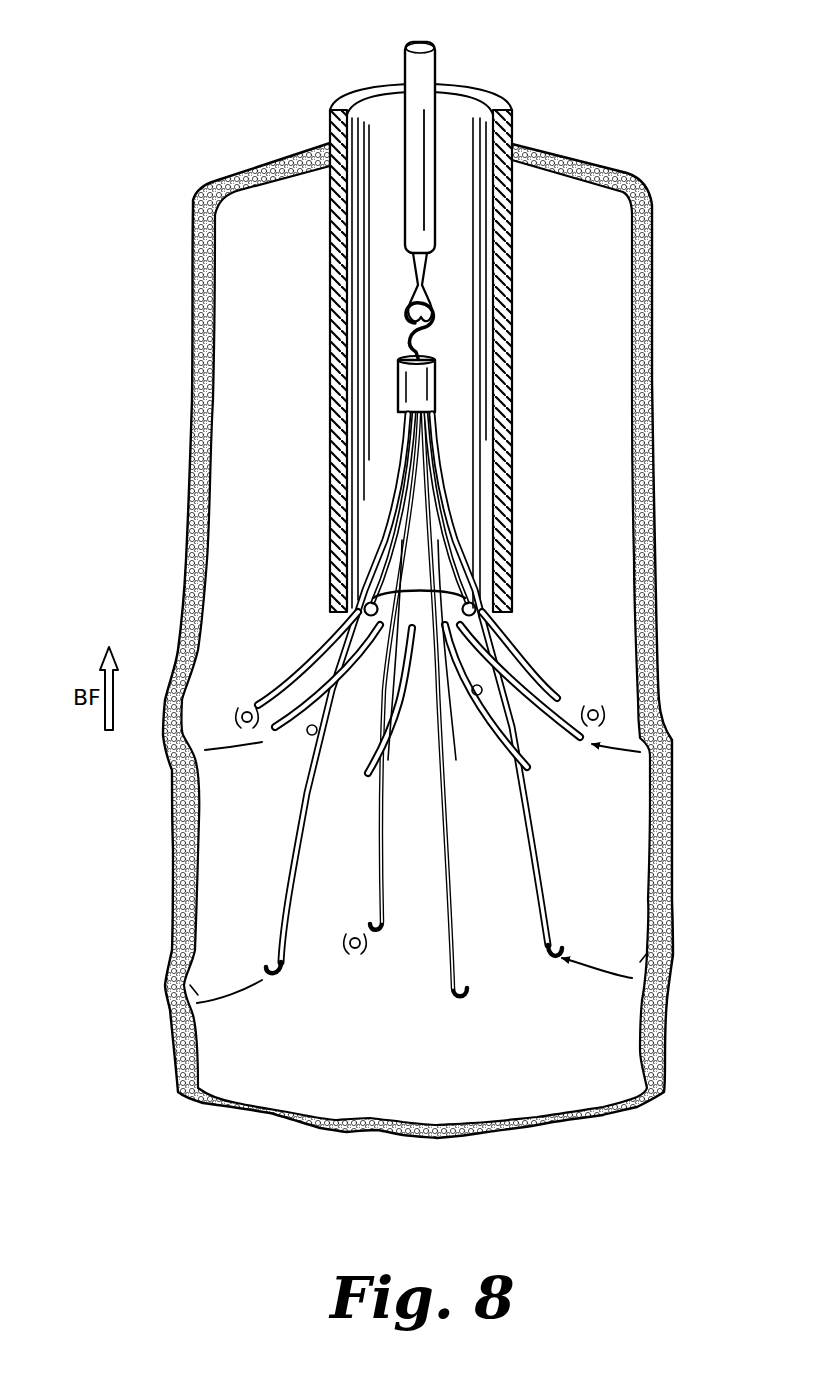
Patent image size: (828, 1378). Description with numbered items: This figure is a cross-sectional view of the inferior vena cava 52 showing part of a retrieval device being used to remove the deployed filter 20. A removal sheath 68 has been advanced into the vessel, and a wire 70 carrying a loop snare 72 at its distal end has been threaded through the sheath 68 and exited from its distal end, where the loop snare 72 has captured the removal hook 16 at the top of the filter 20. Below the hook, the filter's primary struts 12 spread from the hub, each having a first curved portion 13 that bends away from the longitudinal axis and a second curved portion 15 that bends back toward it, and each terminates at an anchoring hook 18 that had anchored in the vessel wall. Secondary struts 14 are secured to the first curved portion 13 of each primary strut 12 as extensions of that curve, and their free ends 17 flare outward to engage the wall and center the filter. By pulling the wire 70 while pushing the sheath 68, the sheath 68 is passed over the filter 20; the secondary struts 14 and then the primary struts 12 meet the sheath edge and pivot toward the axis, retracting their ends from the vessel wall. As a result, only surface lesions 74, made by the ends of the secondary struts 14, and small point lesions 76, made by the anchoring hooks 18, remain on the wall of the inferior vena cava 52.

The primary struts 12 is at (382, 537).
The first curved portion 13 is at (366, 597).
The secondary struts 14 is at (312, 658).
The second curved portion 15 is at (296, 835).
The removal hook 16 is at (403, 322).
The free ends 17 is at (367, 780).
The anchoring hooks 18 is at (268, 970).
The filter 20 is at (366, 443).
The inferior vena cava 52 is at (192, 350).
The removal sheath 68 is at (512, 350).
The wire 70 is at (437, 58).
The loop snare 72 is at (428, 300).
The surface lesions 74 is at (198, 730).
The small point lesions 76 is at (200, 985).